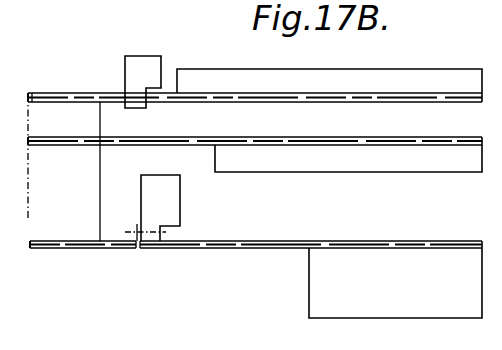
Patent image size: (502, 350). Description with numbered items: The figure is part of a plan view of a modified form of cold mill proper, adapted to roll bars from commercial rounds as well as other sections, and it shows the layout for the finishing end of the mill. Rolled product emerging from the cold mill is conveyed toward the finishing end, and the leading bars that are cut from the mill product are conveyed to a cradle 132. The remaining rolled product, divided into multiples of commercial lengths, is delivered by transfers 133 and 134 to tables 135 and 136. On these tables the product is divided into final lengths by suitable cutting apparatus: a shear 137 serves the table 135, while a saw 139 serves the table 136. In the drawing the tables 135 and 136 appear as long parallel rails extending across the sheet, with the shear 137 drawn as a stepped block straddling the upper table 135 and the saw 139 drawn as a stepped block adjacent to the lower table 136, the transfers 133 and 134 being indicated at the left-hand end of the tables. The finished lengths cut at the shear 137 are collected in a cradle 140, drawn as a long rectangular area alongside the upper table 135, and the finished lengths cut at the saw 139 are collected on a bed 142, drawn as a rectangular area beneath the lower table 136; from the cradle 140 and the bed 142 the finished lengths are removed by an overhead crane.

The cradle 132 is at (360, 164).
The transfer 133 is at (40, 109).
The transfer 134 is at (70, 227).
The table 135 is at (82, 77).
The table 136 is at (120, 247).
The shear 137 is at (153, 43).
The saw 139 is at (170, 202).
The cradle 140 is at (258, 80).
The bed 142 is at (330, 283).